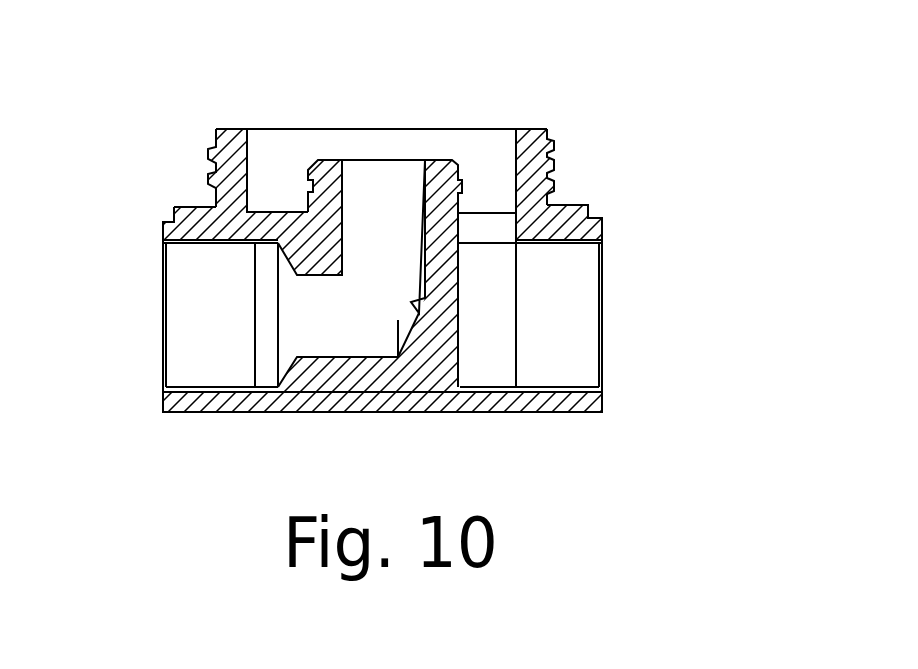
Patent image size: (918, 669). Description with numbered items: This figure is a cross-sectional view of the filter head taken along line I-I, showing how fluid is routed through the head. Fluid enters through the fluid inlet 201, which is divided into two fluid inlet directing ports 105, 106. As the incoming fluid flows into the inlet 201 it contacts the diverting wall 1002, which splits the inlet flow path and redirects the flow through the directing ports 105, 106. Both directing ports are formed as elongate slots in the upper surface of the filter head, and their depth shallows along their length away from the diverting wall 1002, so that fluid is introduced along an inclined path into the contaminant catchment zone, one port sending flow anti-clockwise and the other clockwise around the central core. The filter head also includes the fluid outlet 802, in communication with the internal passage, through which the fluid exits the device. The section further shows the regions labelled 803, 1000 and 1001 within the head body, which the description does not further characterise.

The fluid inlet directing port 105 is at (283, 212).
The fluid inlet directing port 106 is at (495, 213).
The insert body 803 is at (327, 162).
The flow passage 1000 is at (418, 241).
The recess 1001 is at (512, 230).
The diverting wall 1002 is at (463, 355).
The fluid outlet 802 is at (203, 308).
The fluid inlet 201 is at (583, 343).